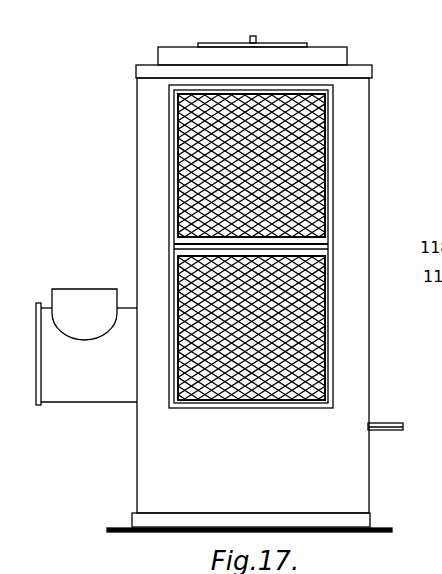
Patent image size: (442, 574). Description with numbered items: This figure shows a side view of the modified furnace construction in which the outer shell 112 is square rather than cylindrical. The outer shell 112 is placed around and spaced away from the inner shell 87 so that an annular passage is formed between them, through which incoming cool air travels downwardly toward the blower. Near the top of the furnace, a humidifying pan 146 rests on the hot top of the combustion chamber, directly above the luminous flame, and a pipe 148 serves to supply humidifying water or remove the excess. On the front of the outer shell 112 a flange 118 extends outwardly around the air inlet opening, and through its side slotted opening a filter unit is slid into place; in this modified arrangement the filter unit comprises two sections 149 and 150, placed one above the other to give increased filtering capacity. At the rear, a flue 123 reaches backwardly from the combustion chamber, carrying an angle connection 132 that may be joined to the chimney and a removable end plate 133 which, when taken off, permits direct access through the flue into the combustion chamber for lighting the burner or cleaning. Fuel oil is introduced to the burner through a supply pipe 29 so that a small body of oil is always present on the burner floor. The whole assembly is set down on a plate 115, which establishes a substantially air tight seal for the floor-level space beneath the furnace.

The outer shell 112 is at (252, 296).
The cylindrical shell 87 is at (347, 50).
The humidifying pan 146 is at (227, 43).
The pipe 148 is at (256, 38).
The flange 118 is at (172, 219).
The filter unit section 149 is at (310, 177).
The filter unit section 150 is at (298, 325).
The flue 123 is at (89, 355).
The removable end plate 133 is at (35, 408).
The angle connection 132 is at (82, 300).
The supply pipe 29 is at (387, 423).
The plate 115 is at (107, 530).